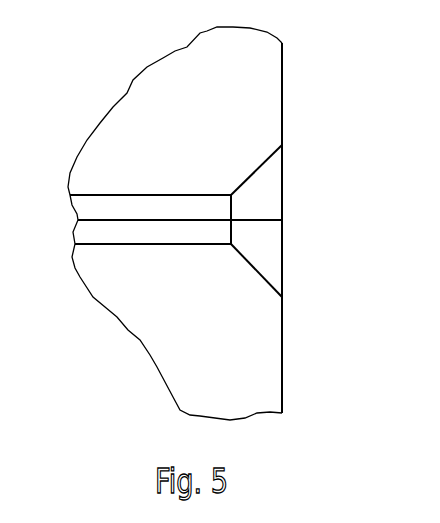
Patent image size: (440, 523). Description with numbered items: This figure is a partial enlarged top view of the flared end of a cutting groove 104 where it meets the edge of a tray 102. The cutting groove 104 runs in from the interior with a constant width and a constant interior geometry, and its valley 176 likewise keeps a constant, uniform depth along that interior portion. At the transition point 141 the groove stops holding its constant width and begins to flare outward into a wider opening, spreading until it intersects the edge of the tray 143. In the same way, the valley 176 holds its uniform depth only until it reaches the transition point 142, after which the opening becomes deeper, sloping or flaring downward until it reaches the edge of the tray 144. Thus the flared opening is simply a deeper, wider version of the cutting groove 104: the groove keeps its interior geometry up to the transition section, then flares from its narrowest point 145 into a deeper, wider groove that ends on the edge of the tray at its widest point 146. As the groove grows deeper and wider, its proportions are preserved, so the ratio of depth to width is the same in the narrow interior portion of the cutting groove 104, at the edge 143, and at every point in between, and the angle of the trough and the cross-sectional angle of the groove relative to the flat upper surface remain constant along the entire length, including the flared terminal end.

The substrate body 102 is at (242, 386).
The cutting groove 104 is at (112, 194).
The transition point 141 is at (230, 193).
The transition point 142 is at (232, 222).
The edge of the tray 143 is at (283, 146).
The edge of the tray 144 is at (283, 221).
The narrowest point 145 is at (230, 242).
The widest point 146 is at (284, 275).
The valley of the cutting groove 176 is at (120, 221).